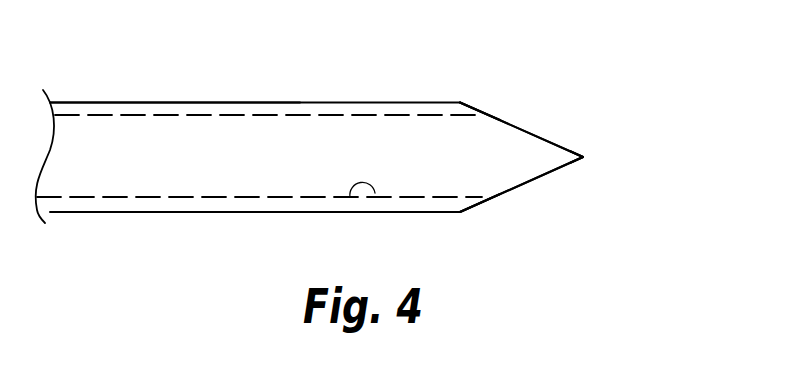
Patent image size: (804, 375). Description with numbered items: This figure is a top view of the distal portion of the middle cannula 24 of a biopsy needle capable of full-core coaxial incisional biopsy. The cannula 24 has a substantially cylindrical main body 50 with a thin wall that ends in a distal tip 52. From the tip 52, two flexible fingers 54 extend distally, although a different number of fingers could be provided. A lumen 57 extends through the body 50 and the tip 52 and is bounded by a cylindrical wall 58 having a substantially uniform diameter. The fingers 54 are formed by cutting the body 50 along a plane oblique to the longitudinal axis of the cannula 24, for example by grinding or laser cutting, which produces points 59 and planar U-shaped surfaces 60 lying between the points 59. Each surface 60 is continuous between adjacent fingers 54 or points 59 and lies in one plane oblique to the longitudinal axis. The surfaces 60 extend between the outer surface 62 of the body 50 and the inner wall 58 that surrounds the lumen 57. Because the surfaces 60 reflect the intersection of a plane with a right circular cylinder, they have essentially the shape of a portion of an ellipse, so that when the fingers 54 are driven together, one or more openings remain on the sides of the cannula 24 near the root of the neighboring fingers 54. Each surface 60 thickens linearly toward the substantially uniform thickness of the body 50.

The middle cannula component 24 is at (248, 86).
The main body 50 is at (193, 212).
The distal tip 52 is at (553, 195).
The flexible fingers 54 is at (548, 159).
The lumen 57 is at (100, 150).
The cylindrical wall 58 is at (373, 197).
The points 59 is at (585, 159).
The surfaces 60 is at (468, 103).
The outer surface 62 is at (263, 212).